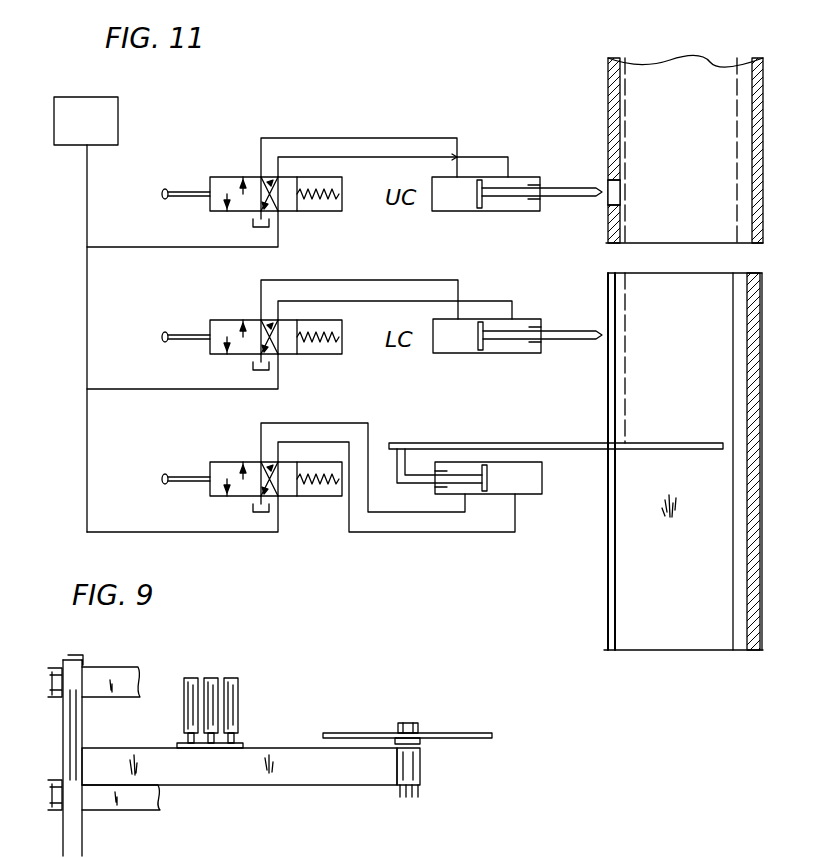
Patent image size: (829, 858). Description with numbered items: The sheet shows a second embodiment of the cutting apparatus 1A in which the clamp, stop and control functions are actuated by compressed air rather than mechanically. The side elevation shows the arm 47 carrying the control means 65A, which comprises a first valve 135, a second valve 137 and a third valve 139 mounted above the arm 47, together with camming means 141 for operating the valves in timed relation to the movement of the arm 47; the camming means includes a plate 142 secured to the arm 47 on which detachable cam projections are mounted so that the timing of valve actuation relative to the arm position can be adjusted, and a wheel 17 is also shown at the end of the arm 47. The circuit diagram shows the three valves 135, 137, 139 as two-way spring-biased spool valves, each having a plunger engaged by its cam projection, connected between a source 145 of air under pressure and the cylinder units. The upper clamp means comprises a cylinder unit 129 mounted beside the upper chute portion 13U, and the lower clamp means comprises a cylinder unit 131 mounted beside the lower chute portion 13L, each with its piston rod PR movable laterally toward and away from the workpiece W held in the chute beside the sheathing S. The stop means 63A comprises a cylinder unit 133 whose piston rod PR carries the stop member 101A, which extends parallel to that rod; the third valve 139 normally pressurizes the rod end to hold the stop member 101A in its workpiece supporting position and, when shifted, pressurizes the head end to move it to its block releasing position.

In FIG. 11, the source of air under pressure 145 is at (120, 122).
In FIG. 11, the first valve 135 is at (222, 177).
In FIG. 9, the first valve 135 is at (192, 678).
In FIG. 11, the second valve 137 is at (222, 320).
In FIG. 9, the second valve 137 is at (211, 678).
In FIG. 11, the third valve 139 is at (225, 462).
In FIG. 9, the third valve 139 is at (231, 678).
In FIG. 11, the first cylinder unit 129 is at (450, 211).
In FIG. 11, the second cylinder unit 131 is at (452, 353).
In FIG. 11, the third cylinder unit 133 is at (530, 495).
In FIG. 11, the upper chute portion 13U is at (609, 72).
In FIG. 11, the lower chute portion 13L is at (606, 374).
In FIG. 11, the stop member 101A is at (440, 443).
In FIG. 11, the stop means 63A is at (527, 495).
In FIG. 9, the arm 47 is at (230, 772).
In FIG. 9, the disc 17 is at (455, 733).
In FIG. 9, the camming means 141 is at (252, 741).
In FIG. 9, the plate 142 is at (178, 745).
In FIG. 9, the control means 65A is at (252, 633).
In FIG. 9, the cutting apparatus 1A is at (290, 681).
In FIG. 11, the piston rod PR is at (568, 188).
In FIG. 11, the workpiece W is at (665, 612).
In FIG. 11, the sheathing S is at (742, 640).